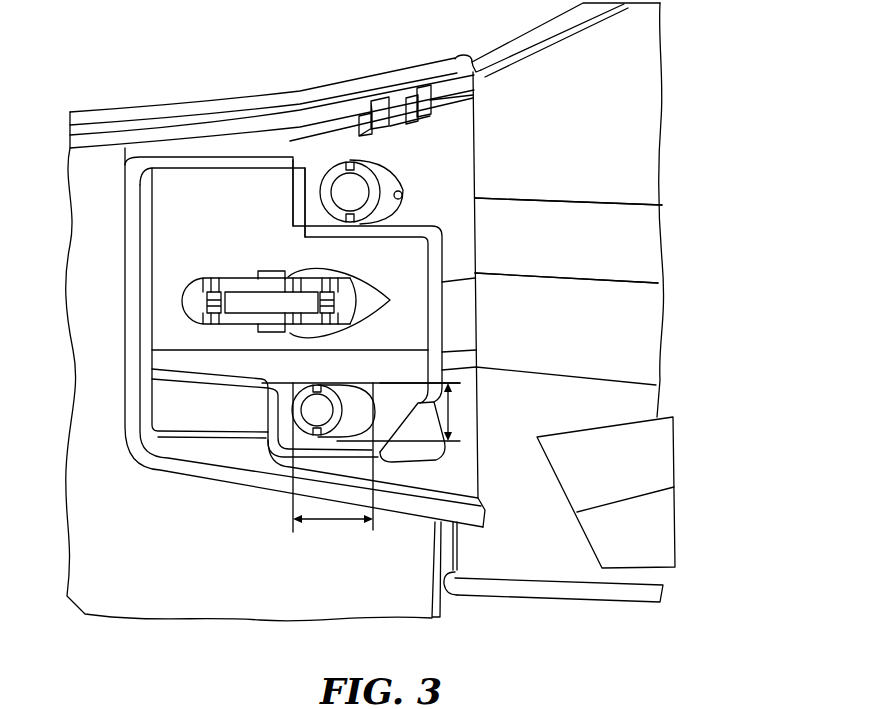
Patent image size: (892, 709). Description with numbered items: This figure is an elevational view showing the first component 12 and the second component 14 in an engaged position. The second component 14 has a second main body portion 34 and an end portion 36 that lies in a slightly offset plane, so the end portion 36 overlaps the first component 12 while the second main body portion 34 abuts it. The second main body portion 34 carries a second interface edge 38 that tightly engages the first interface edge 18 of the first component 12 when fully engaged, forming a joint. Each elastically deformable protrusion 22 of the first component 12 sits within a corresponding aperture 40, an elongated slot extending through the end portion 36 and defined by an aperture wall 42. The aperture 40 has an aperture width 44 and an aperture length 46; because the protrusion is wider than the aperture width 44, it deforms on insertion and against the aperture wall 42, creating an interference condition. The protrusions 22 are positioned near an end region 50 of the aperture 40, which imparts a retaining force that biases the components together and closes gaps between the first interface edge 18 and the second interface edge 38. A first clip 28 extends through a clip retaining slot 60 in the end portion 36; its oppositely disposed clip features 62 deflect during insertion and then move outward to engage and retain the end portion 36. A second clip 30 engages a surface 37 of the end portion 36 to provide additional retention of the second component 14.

The first component 12 is at (118, 95).
The second component 14 is at (676, 72).
The first interface edge 18 is at (464, 52).
The elastically deformable protrusions 22 is at (366, 165).
The first clip 28 is at (240, 330).
The second clip 30 is at (415, 113).
The second main body portion 34 is at (656, 235).
The end portion 36 is at (180, 486).
The surface 37 is at (470, 101).
The second interface edge 38 is at (448, 584).
The aperture 40 is at (397, 159).
The aperture wall 42 is at (407, 200).
The aperture width 44 is at (455, 410).
The aperture length 46 is at (336, 522).
The end region 50 is at (303, 197).
The clip retaining slot 60 is at (183, 299).
The clip features 62 is at (382, 300).